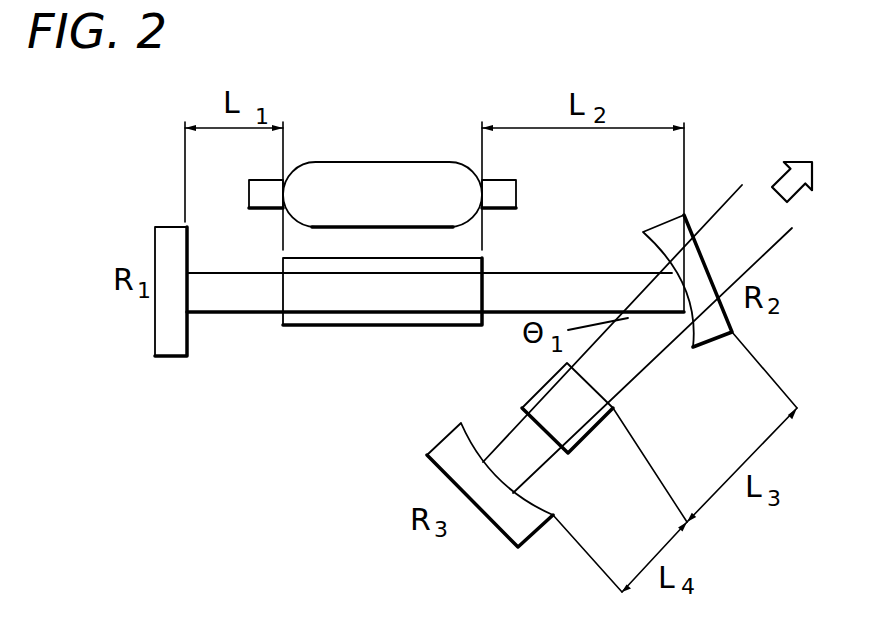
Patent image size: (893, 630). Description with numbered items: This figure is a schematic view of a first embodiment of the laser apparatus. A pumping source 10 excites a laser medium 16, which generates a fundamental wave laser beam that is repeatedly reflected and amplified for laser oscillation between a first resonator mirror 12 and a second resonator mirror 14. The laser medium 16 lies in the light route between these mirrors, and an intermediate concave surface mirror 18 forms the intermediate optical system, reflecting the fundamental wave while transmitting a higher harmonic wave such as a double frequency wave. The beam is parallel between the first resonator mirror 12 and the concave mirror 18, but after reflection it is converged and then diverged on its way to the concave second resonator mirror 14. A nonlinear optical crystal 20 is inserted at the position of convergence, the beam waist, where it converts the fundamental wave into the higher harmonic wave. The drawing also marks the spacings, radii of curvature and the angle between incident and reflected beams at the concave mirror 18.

The pumping source 10 is at (370, 173).
The first resonator mirror 12 is at (170, 233).
The second resonator mirror 14 is at (532, 533).
The laser medium 16 is at (345, 327).
The intermediate concave surface mirror 18 is at (712, 342).
The nonlinear optical crystal 20 is at (580, 447).